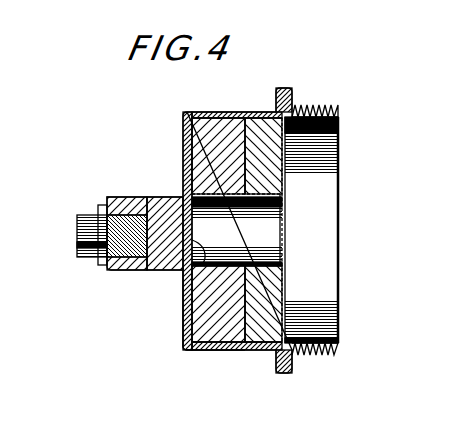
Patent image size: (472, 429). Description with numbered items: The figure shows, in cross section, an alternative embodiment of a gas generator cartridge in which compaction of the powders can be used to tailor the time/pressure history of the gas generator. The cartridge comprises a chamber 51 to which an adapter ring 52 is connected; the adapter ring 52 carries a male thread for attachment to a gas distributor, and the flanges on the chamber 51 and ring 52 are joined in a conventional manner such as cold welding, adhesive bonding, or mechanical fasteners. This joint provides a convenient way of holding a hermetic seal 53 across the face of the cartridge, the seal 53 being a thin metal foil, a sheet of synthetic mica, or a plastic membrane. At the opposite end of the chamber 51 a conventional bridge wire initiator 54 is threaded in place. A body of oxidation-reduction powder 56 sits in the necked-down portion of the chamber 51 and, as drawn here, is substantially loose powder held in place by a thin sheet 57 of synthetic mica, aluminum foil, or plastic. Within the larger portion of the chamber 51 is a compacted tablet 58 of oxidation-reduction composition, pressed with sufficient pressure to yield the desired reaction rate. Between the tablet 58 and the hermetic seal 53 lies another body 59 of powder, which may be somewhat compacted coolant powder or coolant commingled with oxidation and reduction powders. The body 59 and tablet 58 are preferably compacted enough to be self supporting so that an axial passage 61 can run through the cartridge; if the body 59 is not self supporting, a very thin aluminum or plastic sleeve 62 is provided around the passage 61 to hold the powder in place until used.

The chamber 51 is at (232, 110).
The adapter ring 52 is at (310, 107).
The hermetic seal 53 is at (285, 253).
The bridge wire initiator 54 is at (80, 237).
The body of oxidation-reduction powder 56 is at (160, 263).
The thin sheet 57 is at (203, 277).
The compacted tablet 58 is at (207, 140).
The body of powder 59 is at (258, 116).
The axial passage 61 is at (285, 265).
The sleeve 62 is at (218, 195).